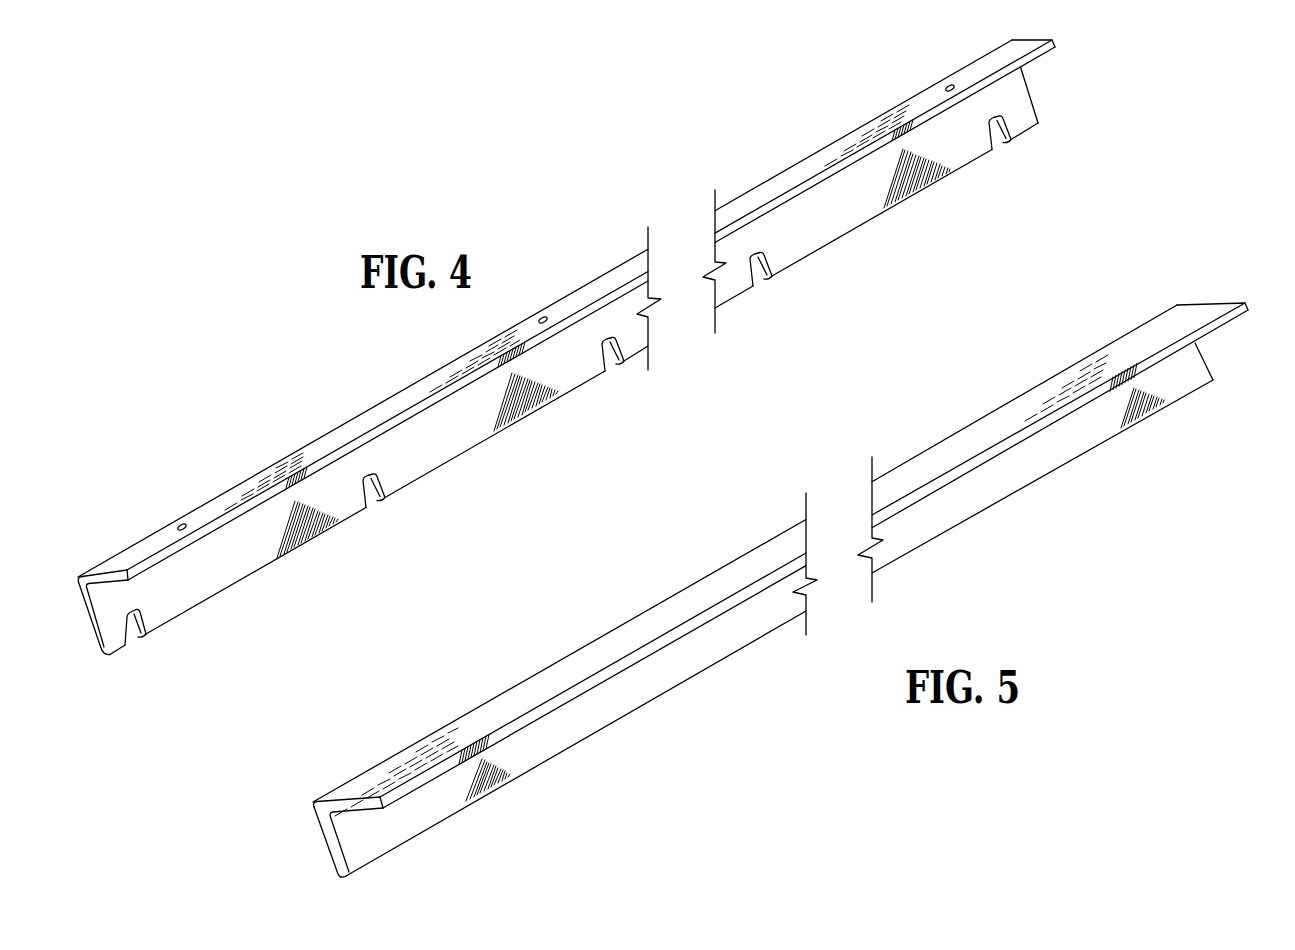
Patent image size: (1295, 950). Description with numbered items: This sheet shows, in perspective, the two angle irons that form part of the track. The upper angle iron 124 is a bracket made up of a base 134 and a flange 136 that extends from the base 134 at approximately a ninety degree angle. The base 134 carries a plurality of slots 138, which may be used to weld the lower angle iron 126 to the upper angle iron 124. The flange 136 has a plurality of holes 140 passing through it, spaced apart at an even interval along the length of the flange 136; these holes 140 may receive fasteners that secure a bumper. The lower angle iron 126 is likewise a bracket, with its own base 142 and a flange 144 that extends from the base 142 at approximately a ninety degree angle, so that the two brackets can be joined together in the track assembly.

In FIG. 4, the upper angle iron 124 is at (136, 427).
In FIG. 4, the base 134 is at (240, 565).
In FIG. 4, the flange 136 is at (236, 493).
In FIG. 4, the slots 138 is at (136, 620).
In FIG. 4, the holes 140 is at (183, 525).
In FIG. 5, the lower angle iron 126 is at (348, 722).
In FIG. 5, the base 142 is at (437, 805).
In FIG. 5, the flange 144 is at (452, 735).